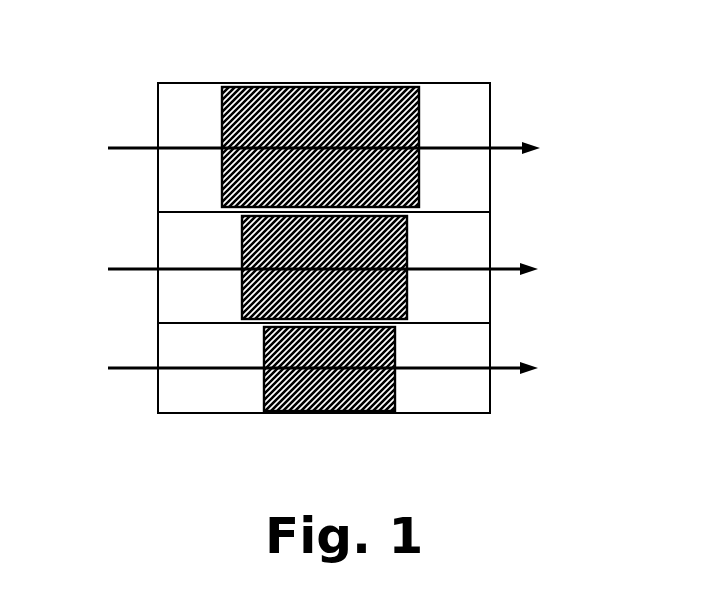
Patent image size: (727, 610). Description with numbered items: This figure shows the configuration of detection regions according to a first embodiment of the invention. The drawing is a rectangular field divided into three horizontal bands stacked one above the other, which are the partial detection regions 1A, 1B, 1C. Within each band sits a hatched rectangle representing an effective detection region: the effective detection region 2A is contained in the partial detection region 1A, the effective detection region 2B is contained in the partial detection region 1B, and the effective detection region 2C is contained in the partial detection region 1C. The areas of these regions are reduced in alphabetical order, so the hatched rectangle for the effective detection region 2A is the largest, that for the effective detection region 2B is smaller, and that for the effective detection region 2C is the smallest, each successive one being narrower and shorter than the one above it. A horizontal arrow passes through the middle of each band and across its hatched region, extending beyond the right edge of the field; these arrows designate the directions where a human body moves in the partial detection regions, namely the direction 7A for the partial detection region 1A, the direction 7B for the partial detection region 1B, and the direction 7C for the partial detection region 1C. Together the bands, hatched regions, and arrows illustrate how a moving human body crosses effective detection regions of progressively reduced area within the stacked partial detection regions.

The partial detection region 1A is at (158, 108).
The partial detection region 1B is at (158, 245).
The partial detection region 1C is at (158, 347).
The effective detection region 2A is at (419, 114).
The effective detection region 2B is at (407, 242).
The effective detection region 2C is at (395, 345).
The direction of human body movement 7A is at (526, 146).
The direction of human body movement 7B is at (527, 266).
The direction of human body movement 7C is at (528, 370).